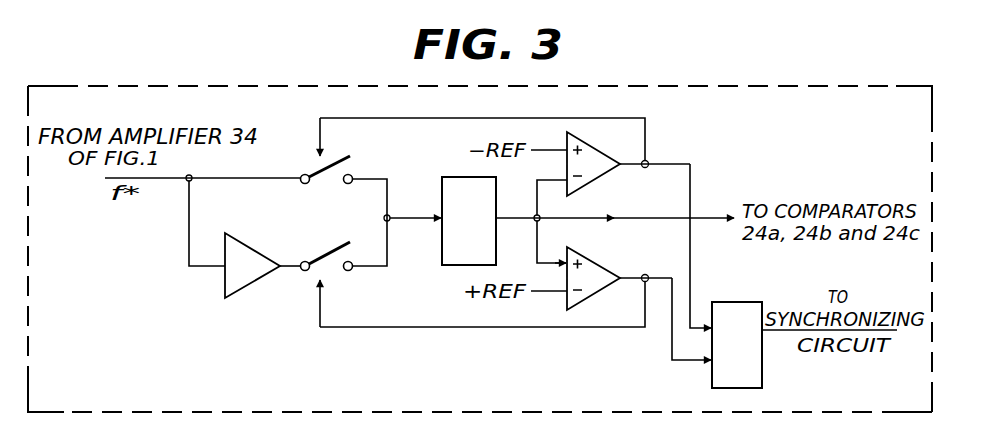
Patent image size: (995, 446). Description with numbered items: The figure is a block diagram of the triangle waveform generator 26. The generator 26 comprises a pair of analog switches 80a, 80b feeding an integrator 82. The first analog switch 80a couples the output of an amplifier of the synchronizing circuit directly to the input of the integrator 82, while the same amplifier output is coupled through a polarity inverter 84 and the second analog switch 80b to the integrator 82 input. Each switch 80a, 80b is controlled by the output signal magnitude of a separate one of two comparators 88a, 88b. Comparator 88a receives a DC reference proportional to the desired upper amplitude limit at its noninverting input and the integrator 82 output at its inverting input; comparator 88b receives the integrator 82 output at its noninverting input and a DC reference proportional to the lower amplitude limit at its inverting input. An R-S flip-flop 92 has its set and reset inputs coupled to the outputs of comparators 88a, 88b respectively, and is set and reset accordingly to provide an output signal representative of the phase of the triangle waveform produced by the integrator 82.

The triangle waveform generator 26 is at (480, 249).
The analog switch 80a is at (329, 165).
The analog switch 80b is at (323, 248).
The integrator 82 is at (461, 177).
The polarity inverter 84 is at (250, 246).
The comparator 88a is at (600, 180).
The comparator 88b is at (602, 266).
The R-S flip-flop 92 is at (736, 300).